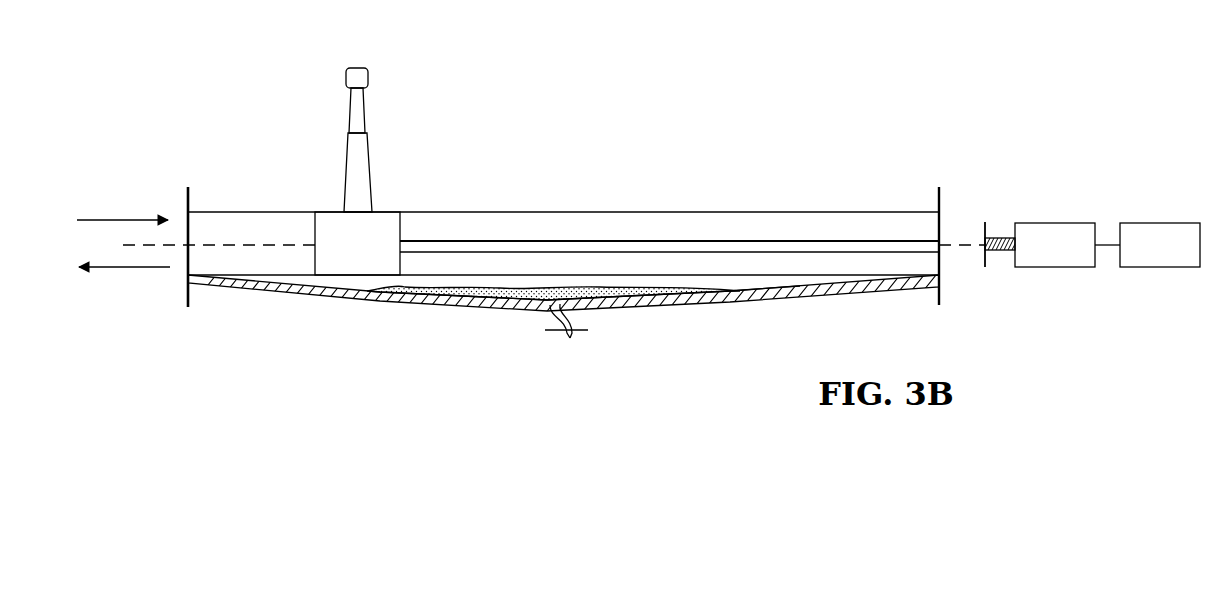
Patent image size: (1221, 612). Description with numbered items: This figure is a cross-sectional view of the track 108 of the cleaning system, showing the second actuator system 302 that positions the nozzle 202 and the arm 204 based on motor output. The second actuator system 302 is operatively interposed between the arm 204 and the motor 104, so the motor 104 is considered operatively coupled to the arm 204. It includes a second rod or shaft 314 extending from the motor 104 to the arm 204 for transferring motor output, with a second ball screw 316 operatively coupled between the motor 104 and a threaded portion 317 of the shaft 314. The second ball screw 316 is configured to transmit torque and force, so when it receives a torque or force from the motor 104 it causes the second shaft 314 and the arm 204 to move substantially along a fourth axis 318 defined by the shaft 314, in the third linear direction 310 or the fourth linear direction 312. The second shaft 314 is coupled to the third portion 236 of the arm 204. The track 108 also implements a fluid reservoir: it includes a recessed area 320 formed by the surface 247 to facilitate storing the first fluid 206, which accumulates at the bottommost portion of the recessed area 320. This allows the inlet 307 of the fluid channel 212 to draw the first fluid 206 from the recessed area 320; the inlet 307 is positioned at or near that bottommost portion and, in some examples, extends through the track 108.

The motor 104 is at (1160, 245).
The track 108 is at (713, 302).
The nozzle 202 is at (369, 72).
The arm 204 is at (325, 132).
The first fluid 206 is at (613, 287).
The fluid channel 212 is at (549, 320).
The third portion of the arm 236 is at (313, 232).
The surface of the track 247 is at (768, 288).
The second actuator system 302 is at (1070, 145).
The inlet 307 is at (546, 296).
The third linear direction 310 is at (132, 268).
The fourth linear direction 312 is at (107, 213).
The second shaft 314 is at (782, 241).
The second ball screw 316 is at (1067, 245).
The threaded portion of the shaft 317 is at (1005, 236).
The fourth axis 318 is at (166, 247).
The recessed area 320 is at (552, 272).